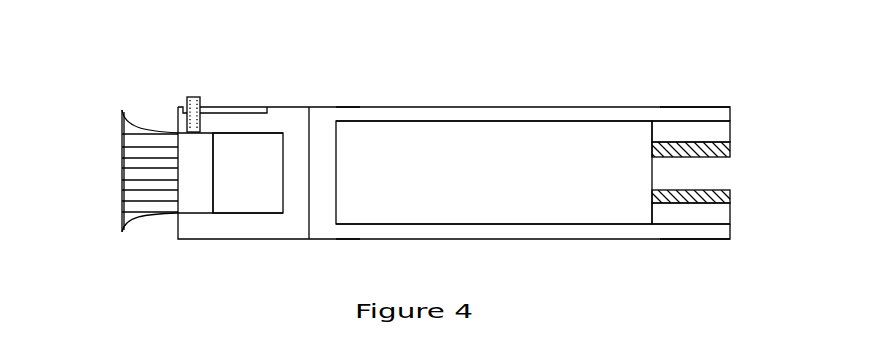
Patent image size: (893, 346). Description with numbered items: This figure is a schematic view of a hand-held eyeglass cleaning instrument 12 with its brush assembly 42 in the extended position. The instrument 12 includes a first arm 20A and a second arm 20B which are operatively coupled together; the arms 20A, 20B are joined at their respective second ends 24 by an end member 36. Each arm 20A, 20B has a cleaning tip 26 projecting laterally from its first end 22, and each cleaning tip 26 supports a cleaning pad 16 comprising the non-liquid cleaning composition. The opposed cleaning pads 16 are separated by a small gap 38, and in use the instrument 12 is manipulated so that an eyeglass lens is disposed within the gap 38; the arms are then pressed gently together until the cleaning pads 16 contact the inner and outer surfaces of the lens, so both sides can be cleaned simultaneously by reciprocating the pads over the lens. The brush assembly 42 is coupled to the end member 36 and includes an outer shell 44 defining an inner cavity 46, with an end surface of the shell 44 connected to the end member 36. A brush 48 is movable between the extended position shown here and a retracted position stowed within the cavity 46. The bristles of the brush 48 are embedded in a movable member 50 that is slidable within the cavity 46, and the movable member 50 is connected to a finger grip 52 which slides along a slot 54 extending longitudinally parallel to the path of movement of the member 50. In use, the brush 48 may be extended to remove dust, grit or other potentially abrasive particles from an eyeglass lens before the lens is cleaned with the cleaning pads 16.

The hand-held cleaning instrument 12 is at (746, 86).
The cleaning pad 16 is at (732, 148).
The first arm 20A is at (587, 107).
The second arm 20B is at (592, 240).
The first end 22 is at (720, 107).
The second end 24 is at (357, 107).
The cleaning tip 26 is at (732, 131).
The end member 36 is at (320, 180).
The gap 38 is at (688, 171).
The brush assembly 42 is at (132, 250).
The outer shell 44 is at (262, 240).
The inner cavity 46 is at (248, 173).
The brush 48 is at (120, 165).
The movable member 50 is at (196, 204).
The finger grip 52 is at (192, 97).
The slot 54 is at (257, 107).